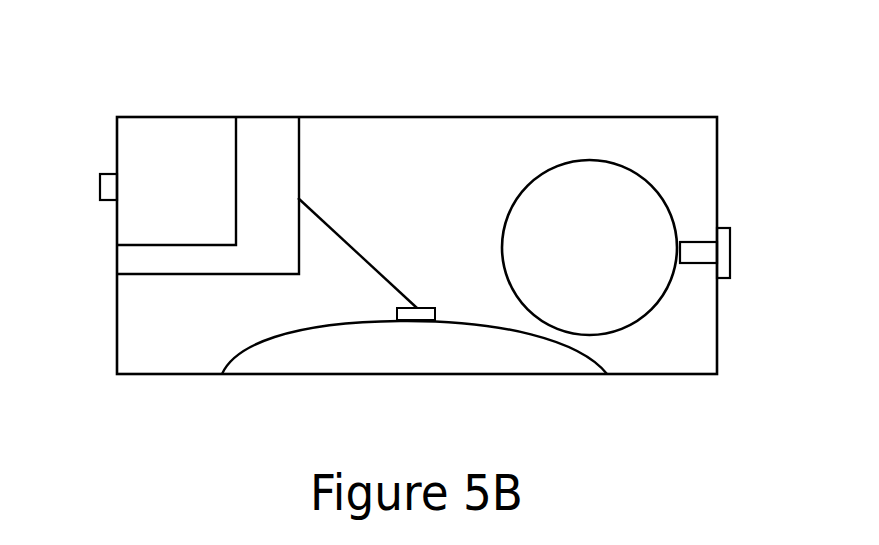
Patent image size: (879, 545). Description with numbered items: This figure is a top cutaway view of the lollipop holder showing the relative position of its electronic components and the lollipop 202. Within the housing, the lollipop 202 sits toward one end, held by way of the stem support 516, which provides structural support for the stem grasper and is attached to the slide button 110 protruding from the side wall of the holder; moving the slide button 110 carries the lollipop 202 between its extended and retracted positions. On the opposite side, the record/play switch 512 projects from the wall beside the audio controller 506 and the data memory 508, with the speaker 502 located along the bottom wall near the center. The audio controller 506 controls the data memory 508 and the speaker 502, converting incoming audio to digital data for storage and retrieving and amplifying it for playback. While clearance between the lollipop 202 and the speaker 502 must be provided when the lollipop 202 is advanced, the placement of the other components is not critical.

The slide button 110 is at (725, 250).
The lollipop 202 is at (586, 203).
The speaker 502 is at (310, 348).
The audio controller 506 is at (273, 137).
The data memory 508 is at (186, 137).
The record/play switch 512 is at (100, 184).
The stem support 516 is at (688, 248).